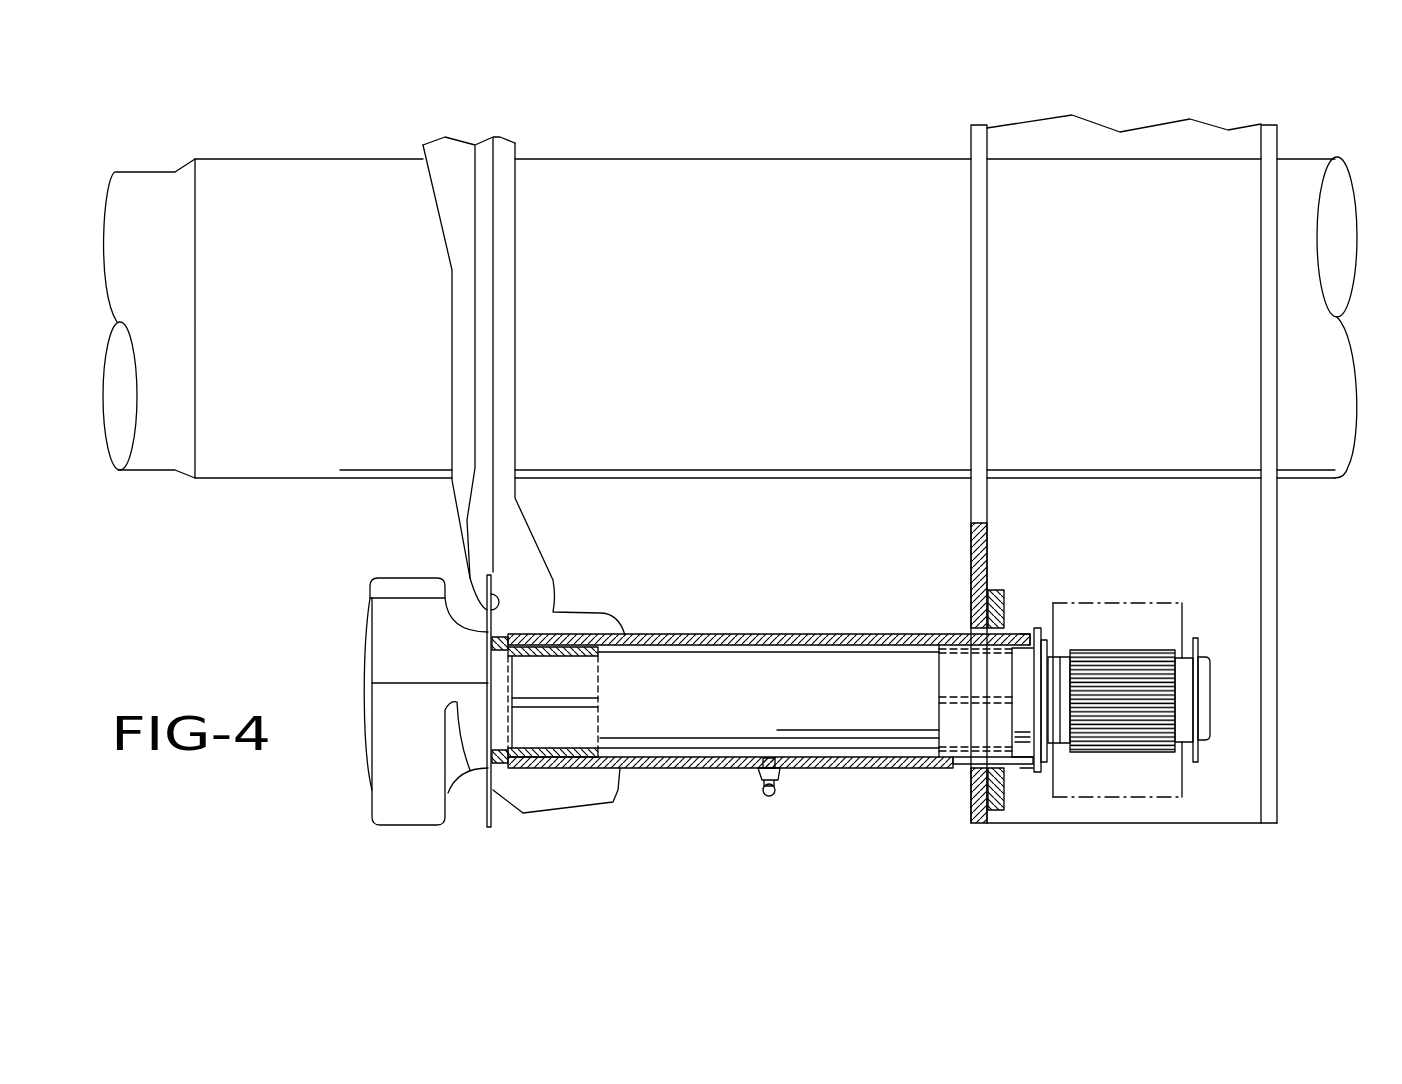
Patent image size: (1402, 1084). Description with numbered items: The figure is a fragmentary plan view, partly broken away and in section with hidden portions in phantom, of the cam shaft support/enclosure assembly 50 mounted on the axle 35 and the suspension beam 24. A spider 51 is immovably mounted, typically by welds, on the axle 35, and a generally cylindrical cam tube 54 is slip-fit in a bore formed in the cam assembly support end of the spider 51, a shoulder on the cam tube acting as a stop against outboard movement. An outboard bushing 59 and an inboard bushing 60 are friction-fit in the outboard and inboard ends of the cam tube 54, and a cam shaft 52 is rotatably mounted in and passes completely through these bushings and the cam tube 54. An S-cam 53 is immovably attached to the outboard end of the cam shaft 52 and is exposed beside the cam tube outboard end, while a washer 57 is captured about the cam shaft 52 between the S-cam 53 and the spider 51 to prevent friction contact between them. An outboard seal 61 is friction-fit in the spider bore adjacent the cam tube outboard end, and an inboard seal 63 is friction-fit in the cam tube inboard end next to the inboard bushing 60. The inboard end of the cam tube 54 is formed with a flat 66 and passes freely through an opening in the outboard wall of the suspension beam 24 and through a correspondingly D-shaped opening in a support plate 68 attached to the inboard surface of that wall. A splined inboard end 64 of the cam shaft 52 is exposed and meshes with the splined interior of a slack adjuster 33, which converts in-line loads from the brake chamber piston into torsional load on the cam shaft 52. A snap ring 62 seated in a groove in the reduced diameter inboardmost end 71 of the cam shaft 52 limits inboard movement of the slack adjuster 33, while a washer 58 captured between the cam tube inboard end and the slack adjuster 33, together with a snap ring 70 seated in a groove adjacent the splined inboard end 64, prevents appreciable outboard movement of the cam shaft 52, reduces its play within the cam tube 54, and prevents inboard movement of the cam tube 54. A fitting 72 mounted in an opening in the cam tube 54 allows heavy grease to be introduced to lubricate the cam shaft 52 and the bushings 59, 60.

The suspension beam 24 is at (1278, 683).
The slack adjuster 33 is at (1172, 615).
The axle 35 is at (255, 428).
The cam shaft support/enclosure assembly 50 is at (858, 768).
The spider 51 is at (465, 500).
The cam shaft 52 is at (690, 712).
The S-cam 53 is at (410, 795).
The cam tube 54 is at (708, 634).
The washer 57 is at (493, 826).
The washer 58 is at (1037, 770).
The outboard bushing 59 is at (563, 647).
The inboard bushing 60 is at (958, 682).
The outboard seal 61 is at (498, 637).
The snap ring 62 is at (1195, 755).
The inboard seal 63 is at (1022, 645).
The splined inboard end 64 is at (1125, 687).
The flat 66 is at (970, 763).
The support plate 68 is at (993, 593).
The snap ring 70 is at (1047, 753).
The reduced diameter inboardmost end 71 is at (1205, 730).
The fitting 72 is at (765, 790).